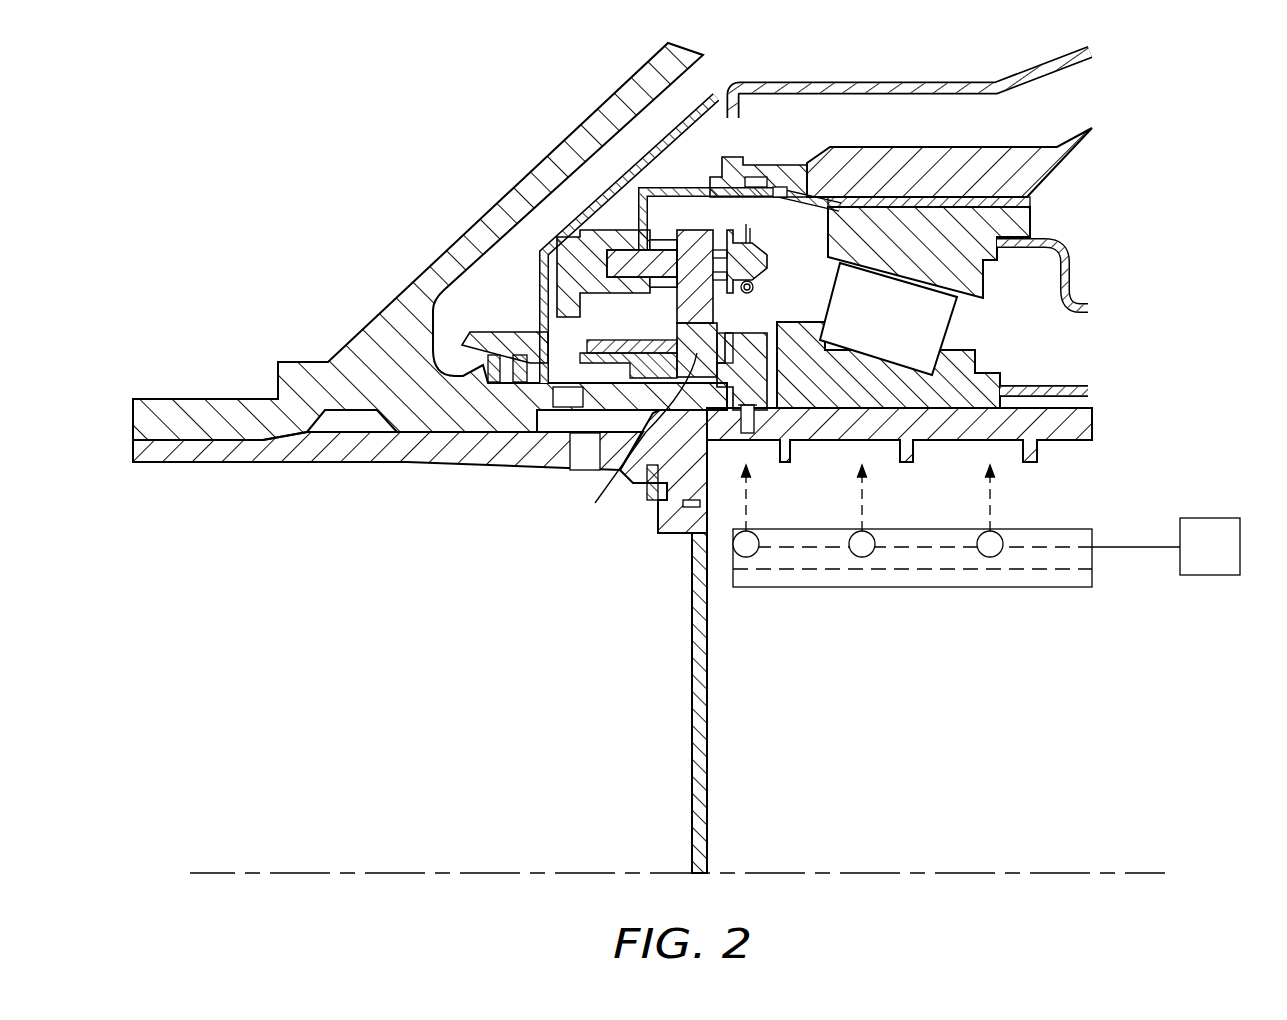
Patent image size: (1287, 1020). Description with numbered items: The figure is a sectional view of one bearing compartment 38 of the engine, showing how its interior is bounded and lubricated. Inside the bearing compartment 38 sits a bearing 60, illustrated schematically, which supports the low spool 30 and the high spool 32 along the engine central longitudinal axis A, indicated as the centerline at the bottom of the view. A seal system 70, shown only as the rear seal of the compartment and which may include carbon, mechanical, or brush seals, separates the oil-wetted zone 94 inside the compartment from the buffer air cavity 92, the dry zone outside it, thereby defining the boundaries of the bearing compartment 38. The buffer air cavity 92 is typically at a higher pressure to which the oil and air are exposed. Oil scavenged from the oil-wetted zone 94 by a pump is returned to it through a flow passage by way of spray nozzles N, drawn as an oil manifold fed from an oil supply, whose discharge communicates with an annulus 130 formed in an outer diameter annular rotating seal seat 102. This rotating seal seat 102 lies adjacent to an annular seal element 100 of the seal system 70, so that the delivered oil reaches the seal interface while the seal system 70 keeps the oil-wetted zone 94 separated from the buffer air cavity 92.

The bearing compartment 38 is at (522, 165).
The buffer air cavity 92 is at (802, 139).
The oil-wetted zone 94 is at (815, 263).
The outer diameter annular rotating seal seat 102 is at (750, 392).
The bearing 60 is at (985, 321).
The low spool 30 is at (702, 428).
The high spool 32 is at (612, 439).
The annular seal element 100 is at (631, 444).
The seal system 70 is at (689, 425).
The annulus 130 is at (753, 422).
The spray nozzle N is at (1058, 572).
The engine central longitudinal axis A is at (1152, 870).